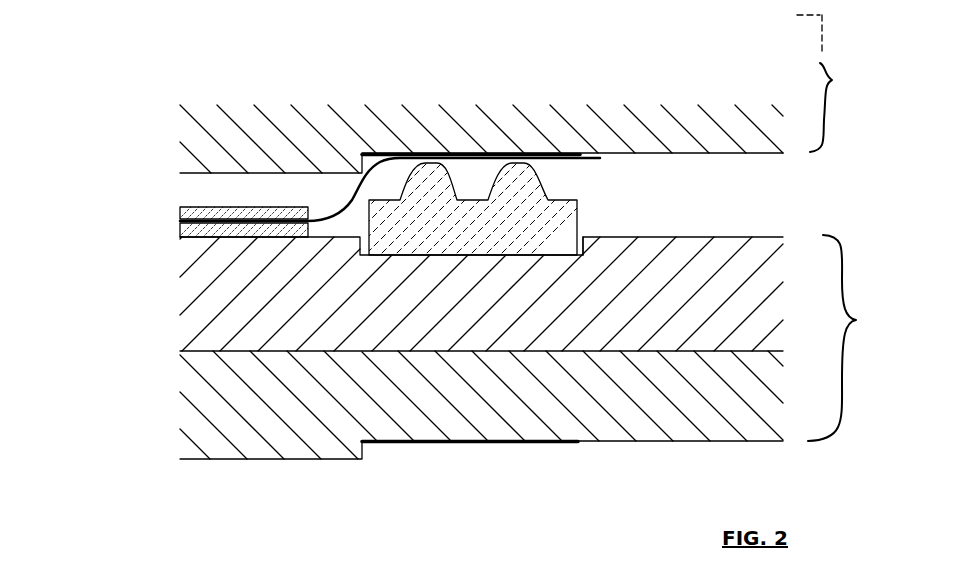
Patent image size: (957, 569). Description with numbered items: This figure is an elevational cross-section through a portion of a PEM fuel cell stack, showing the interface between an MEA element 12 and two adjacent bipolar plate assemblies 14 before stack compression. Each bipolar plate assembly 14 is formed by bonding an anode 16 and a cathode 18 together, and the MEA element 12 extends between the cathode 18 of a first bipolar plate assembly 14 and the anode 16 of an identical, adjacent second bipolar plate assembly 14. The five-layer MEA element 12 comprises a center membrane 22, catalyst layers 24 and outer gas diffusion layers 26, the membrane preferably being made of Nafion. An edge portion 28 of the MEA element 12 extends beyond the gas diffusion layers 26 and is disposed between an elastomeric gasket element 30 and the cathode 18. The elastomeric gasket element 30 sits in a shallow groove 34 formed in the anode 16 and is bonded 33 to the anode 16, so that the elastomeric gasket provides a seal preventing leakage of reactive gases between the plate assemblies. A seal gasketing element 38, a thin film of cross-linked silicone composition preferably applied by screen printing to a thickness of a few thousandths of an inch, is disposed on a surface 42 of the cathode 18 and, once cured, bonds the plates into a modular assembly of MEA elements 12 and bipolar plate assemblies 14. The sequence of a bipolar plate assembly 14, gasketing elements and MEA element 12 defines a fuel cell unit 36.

The MEA element 12 is at (173, 213).
The bipolar plate assembly 14 is at (840, 228).
The anode 16 is at (192, 326).
The cathode 18 is at (250, 127).
The center membrane 22 is at (175, 225).
The catalyst layer 24 is at (241, 218).
The gas diffusion layer 26 is at (128, 240).
The edge portion 28 is at (500, 152).
The elastomeric gasket element 30 is at (519, 192).
The bond 33 is at (568, 256).
The shallow groove 34 is at (583, 237).
The fuel cell unit 36 is at (133, 172).
The seal gasketing element 38 is at (380, 154).
The surface 42 is at (360, 179).